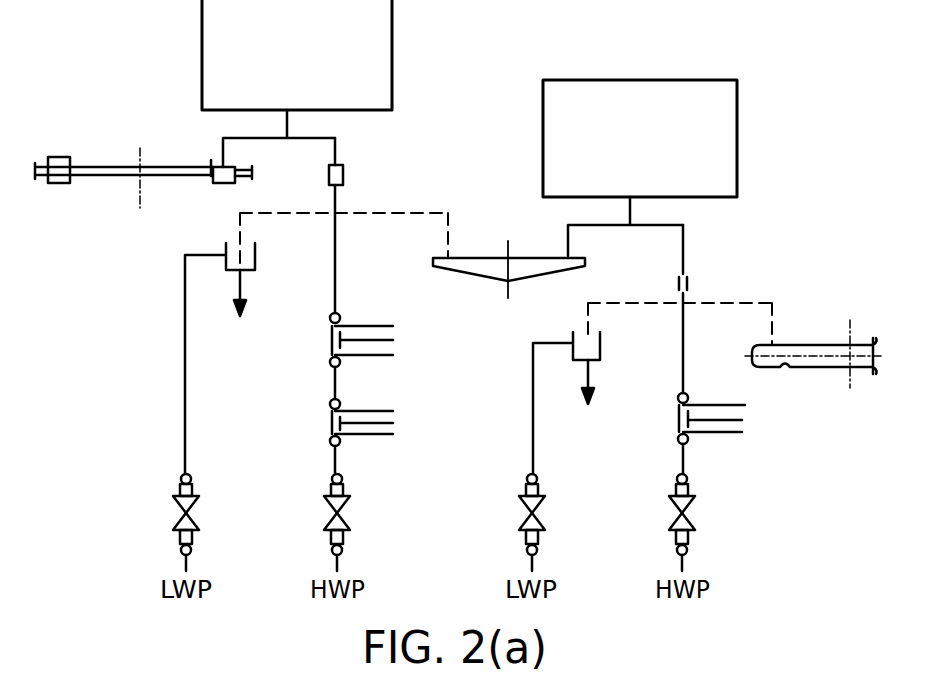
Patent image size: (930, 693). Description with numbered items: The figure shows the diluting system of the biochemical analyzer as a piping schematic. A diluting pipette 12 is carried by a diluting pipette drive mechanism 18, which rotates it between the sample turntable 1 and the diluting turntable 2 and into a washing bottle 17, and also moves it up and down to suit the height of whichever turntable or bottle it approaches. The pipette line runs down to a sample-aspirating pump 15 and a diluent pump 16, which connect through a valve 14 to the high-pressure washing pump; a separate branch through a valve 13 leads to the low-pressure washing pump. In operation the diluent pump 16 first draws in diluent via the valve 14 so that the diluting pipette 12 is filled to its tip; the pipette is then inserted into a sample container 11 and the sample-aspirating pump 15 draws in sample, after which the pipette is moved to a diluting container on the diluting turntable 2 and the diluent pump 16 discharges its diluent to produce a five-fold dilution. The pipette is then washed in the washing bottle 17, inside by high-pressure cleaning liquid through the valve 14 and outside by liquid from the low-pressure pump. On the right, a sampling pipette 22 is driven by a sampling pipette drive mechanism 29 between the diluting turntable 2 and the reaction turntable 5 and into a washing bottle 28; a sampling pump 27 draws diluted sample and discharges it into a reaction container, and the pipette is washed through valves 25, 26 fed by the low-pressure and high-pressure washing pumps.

The sample turntable 1 is at (100, 166).
The diluting turntable 2 is at (468, 257).
The reaction turntable 5 is at (806, 346).
The sample container 11 is at (237, 160).
The diluting pipette 12 is at (221, 151).
The valve 13 is at (190, 516).
The valve 14 is at (341, 516).
The sample-aspirating pump 15 is at (374, 326).
The diluent pump 16 is at (377, 423).
The washing bottle 17 is at (258, 255).
The diluting pipette drive mechanism 18 is at (392, 80).
The sampling pipette 22 is at (568, 252).
The valve 25 is at (536, 516).
The valve 26 is at (686, 516).
The sampling pump 27 is at (722, 433).
The washing bottle 28 is at (600, 350).
The sampling pipette drive mechanism 29 is at (693, 80).